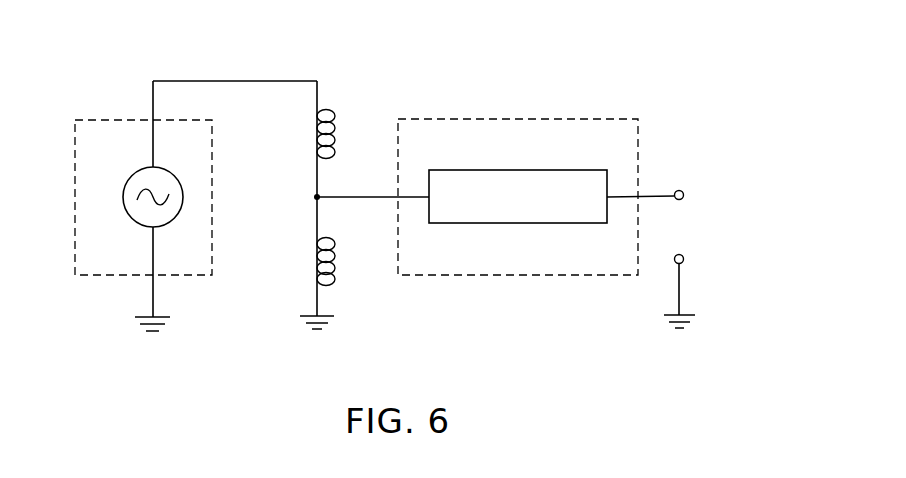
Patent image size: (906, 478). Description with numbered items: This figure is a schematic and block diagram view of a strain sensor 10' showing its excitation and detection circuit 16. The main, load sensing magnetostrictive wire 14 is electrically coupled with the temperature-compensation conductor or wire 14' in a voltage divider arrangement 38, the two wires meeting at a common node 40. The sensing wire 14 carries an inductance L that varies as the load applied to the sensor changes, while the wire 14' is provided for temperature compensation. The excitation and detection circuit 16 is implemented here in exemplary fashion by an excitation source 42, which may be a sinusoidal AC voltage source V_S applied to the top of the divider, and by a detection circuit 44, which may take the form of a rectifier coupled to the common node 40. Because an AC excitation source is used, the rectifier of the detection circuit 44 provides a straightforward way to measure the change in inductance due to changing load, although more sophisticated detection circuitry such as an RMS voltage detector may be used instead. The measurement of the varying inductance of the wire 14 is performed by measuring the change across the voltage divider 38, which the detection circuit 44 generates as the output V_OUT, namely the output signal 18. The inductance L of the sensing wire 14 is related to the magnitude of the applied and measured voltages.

The strain sensor 10' is at (281, 44).
The magnetostrictive electrical conductor 14 is at (346, 133).
The temperature-compensation conductor 14' is at (346, 261).
The excitation and detection circuit 16 is at (434, 94).
The output signal 18 is at (700, 208).
The voltage divider arrangement 38 is at (290, 292).
The common node 40 is at (316, 196).
The excitation source 42 is at (133, 119).
The detection circuit 44 is at (596, 118).